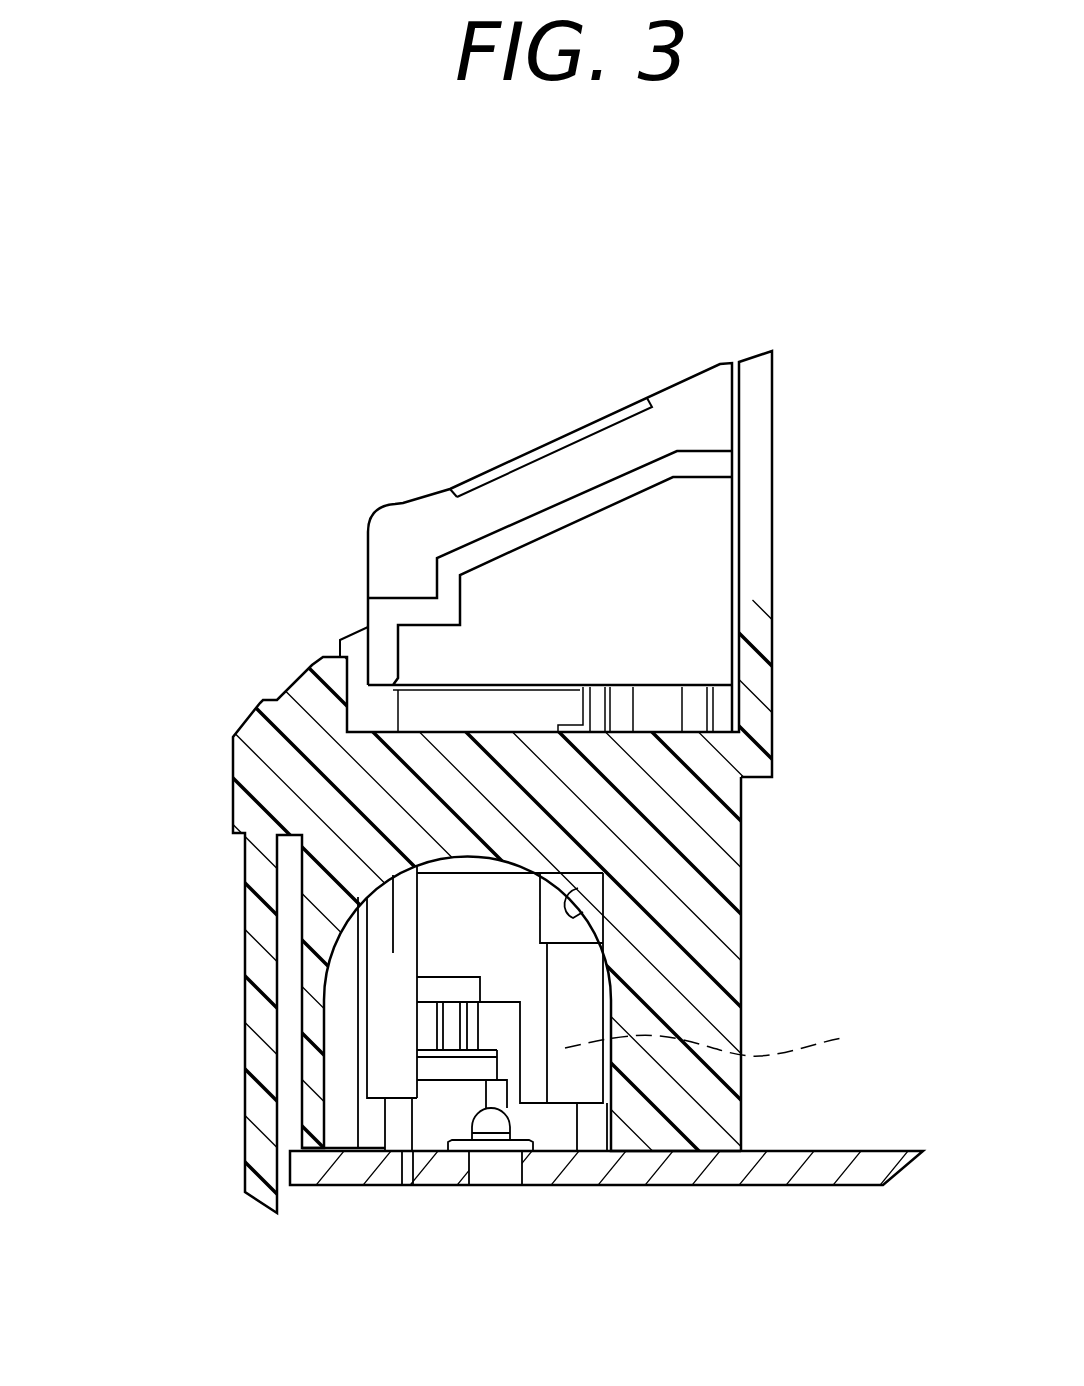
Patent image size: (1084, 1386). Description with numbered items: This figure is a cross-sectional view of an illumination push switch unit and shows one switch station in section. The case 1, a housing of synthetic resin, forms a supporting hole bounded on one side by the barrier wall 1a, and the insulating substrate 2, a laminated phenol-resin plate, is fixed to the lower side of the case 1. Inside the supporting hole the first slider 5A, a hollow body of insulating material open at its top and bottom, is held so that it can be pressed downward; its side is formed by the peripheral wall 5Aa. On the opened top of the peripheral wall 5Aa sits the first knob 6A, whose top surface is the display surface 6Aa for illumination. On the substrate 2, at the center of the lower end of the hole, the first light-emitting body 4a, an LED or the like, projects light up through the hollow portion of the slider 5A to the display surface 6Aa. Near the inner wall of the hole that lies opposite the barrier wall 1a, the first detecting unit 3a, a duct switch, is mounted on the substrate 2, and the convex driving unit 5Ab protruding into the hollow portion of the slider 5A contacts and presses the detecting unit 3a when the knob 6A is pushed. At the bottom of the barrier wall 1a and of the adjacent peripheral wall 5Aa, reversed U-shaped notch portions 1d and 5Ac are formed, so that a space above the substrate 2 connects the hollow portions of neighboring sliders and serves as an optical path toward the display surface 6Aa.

The case 1 is at (778, 682).
The barrier wall 1a is at (697, 982).
The notch portion 1d is at (605, 872).
The insulating substrate 2 is at (762, 1192).
The first detecting unit 3a is at (423, 1123).
The first light-emitting body 4a is at (493, 1143).
The first slider 5A is at (378, 1063).
The peripheral wall 5Aa is at (455, 927).
The driving unit 5Ab is at (427, 1023).
The notch portion 5Ac is at (744, 1035).
The first knob 6A is at (672, 383).
The display surface 6Aa is at (542, 444).